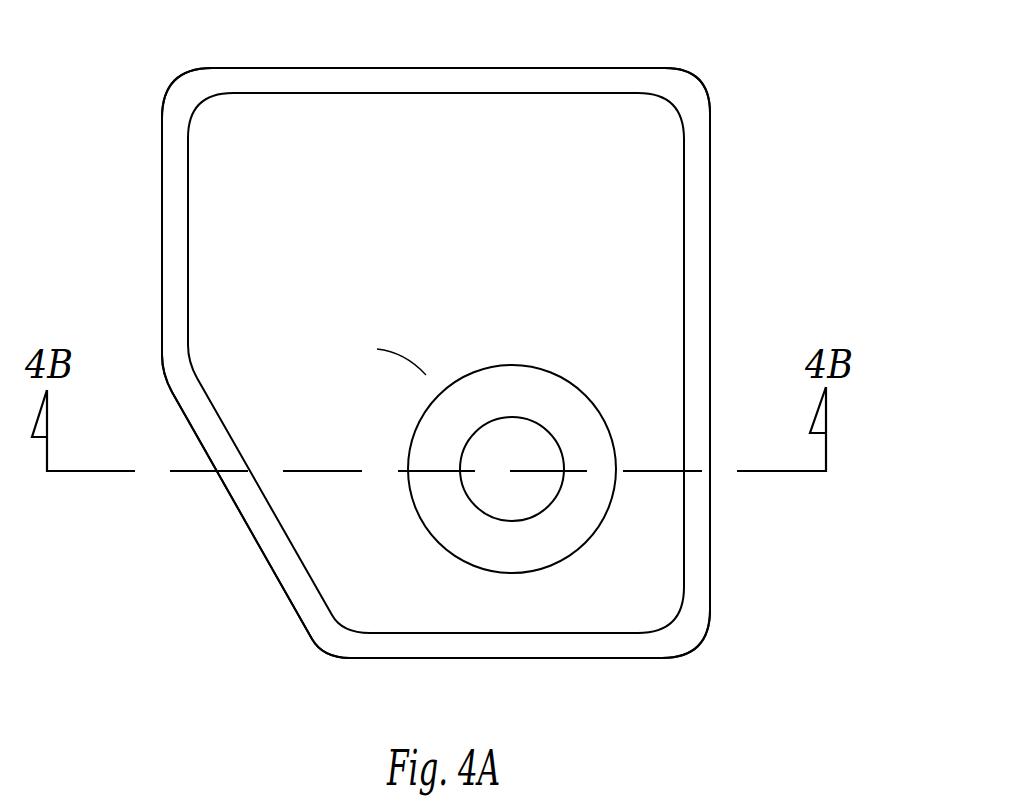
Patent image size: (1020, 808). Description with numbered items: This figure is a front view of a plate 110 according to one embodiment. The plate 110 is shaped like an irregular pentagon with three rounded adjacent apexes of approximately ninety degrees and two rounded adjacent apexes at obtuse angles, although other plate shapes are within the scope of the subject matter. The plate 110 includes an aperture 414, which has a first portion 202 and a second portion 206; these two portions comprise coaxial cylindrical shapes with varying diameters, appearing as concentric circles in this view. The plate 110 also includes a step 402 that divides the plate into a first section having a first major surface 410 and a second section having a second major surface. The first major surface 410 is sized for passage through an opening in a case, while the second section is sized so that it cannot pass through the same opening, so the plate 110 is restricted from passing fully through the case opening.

The plate 110 is at (783, 50).
The step 402 is at (693, 223).
The first major surface 410 is at (663, 173).
The first portion 202 is at (535, 387).
The second portion 206 is at (510, 498).
The aperture 414 is at (426, 375).